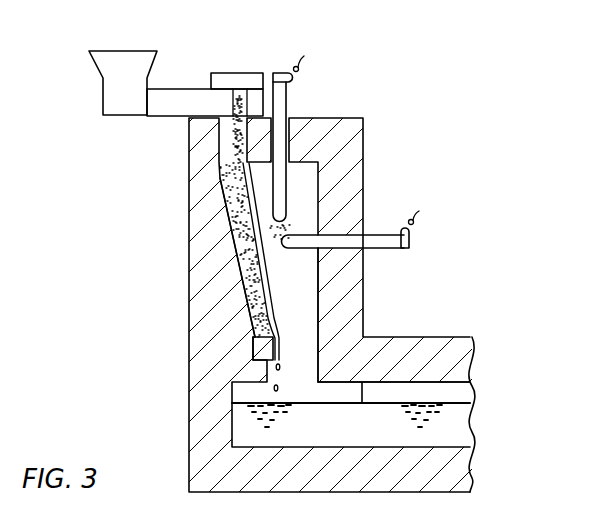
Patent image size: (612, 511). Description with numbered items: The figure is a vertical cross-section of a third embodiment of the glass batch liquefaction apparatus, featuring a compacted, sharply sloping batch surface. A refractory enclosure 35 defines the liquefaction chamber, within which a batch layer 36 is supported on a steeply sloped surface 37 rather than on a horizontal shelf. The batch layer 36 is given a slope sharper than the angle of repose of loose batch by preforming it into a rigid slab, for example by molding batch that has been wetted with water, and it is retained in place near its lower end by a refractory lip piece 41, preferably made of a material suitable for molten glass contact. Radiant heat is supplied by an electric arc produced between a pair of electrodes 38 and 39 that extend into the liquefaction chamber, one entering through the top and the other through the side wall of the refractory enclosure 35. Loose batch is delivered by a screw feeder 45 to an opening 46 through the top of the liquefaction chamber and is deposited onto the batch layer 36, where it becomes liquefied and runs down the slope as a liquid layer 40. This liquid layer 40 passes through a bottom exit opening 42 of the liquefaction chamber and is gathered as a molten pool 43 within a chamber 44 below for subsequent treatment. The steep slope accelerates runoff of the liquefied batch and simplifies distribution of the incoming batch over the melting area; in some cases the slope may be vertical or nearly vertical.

The refractory enclosure 35 is at (363, 143).
The batch layer 36 is at (252, 268).
The steeply sloped surface 37 is at (252, 291).
The electrode 38 is at (386, 250).
The electrode 39 is at (290, 87).
The liquid layer 40 is at (276, 309).
The refractory lip piece 41 is at (253, 350).
The bottom exit opening 42 is at (297, 350).
The molten pool 43 is at (302, 400).
The chamber 44 is at (432, 397).
The screw feeder 45 is at (102, 97).
The opening 46 is at (225, 143).